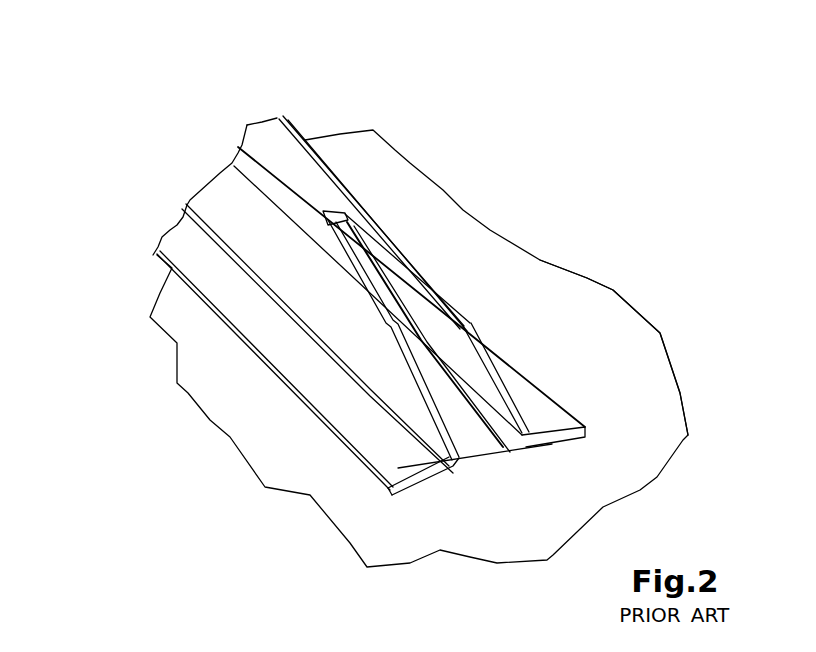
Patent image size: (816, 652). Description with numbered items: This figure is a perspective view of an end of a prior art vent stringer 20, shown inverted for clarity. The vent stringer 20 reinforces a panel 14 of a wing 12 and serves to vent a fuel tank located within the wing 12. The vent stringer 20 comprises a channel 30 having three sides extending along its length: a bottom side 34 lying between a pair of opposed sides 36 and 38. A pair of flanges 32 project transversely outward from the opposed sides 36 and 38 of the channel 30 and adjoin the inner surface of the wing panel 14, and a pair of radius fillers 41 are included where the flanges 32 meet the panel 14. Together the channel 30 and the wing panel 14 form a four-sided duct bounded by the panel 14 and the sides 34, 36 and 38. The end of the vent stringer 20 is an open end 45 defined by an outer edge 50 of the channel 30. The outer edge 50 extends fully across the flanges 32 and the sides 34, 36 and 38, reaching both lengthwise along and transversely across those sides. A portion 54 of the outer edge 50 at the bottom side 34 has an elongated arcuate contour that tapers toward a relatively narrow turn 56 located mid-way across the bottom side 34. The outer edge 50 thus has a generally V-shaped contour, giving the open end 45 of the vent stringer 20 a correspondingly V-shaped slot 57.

The wing 12 is at (466, 205).
The panel 14 is at (527, 290).
The vent stringer 20 is at (175, 178).
The channel 30 is at (148, 257).
The flanges 32 is at (402, 467).
The bottom side 34 is at (263, 150).
The opposed side 36 is at (497, 370).
The opposed side 38 is at (325, 303).
The radius fillers 41 is at (459, 460).
The open end 45 is at (540, 474).
The outer edge 50 is at (456, 452).
The portion of the outer edge 54 is at (360, 212).
The turn 56 is at (331, 211).
The V-shaped slot 57 is at (425, 305).